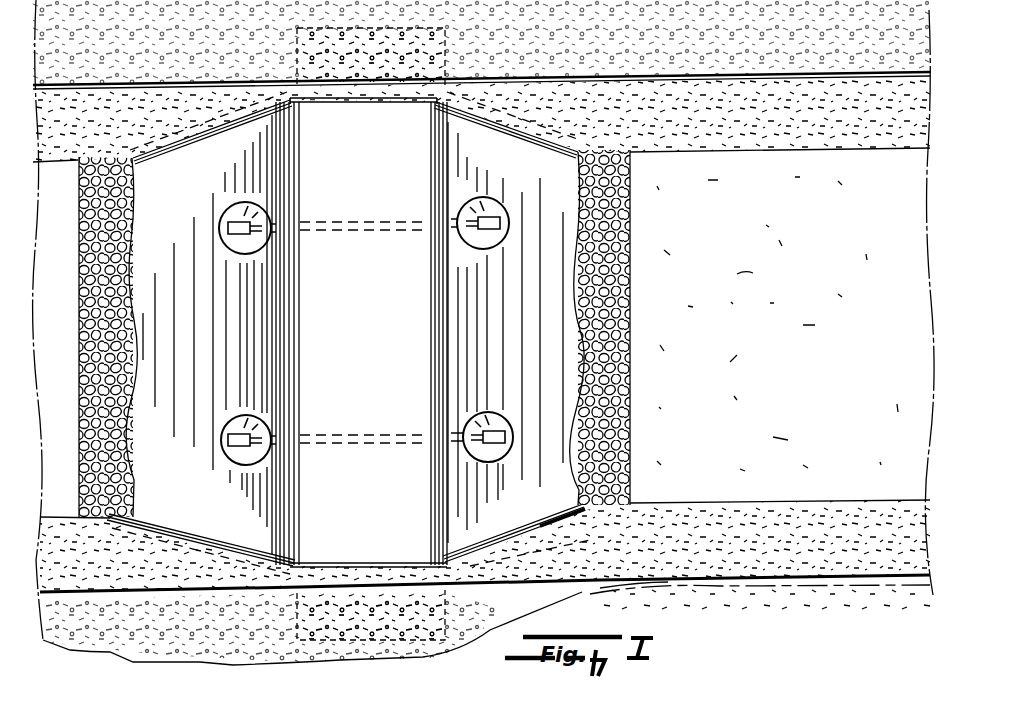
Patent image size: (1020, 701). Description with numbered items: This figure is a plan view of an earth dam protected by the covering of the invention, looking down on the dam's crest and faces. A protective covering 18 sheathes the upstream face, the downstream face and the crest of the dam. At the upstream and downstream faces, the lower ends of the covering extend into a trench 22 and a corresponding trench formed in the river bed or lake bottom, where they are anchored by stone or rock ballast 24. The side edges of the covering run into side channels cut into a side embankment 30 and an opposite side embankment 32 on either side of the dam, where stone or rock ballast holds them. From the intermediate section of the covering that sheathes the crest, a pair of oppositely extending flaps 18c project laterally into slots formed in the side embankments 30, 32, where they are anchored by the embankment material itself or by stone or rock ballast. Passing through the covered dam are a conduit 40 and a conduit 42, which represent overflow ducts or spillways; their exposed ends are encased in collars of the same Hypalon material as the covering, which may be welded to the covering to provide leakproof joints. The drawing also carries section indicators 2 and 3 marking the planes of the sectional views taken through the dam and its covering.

The protective covering 18 is at (370, 342).
The flaps 18c is at (430, 45).
The trench 22 is at (95, 430).
The stone or rock ballast 24 is at (620, 410).
The side embankment 30 is at (650, 95).
The side embankment 32 is at (737, 562).
The conduit 40 is at (372, 222).
The conduit 42 is at (360, 435).
The section line 2- 2 is at (53, 376).
The section line 3- 3 is at (538, 178).